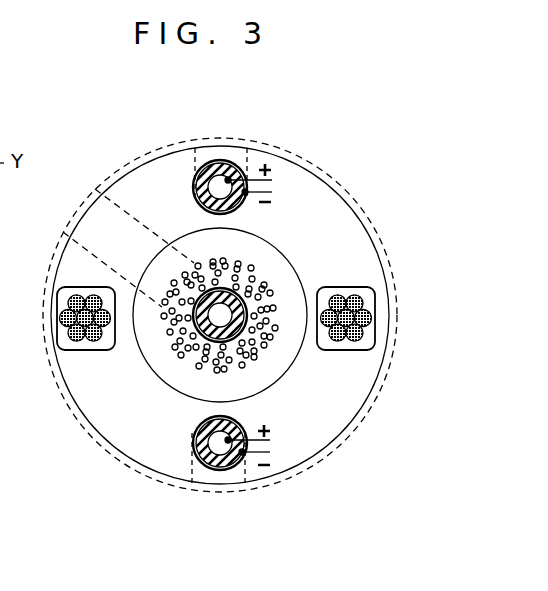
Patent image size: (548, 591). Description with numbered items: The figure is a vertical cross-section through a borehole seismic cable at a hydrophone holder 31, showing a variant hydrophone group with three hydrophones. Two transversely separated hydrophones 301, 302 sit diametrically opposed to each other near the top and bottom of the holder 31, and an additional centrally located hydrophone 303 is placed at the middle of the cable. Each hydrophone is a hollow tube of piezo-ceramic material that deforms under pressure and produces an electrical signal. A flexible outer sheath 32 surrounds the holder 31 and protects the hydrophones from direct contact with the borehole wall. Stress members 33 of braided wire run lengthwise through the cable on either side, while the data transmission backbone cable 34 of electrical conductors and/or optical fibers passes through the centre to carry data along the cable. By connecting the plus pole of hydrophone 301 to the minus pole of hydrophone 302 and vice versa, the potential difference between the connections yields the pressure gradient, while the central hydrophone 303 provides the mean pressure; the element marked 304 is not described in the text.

The hydrophone holder 31 is at (124, 507).
The flexible outer sheath 32 is at (83, 193).
The stress member 33 is at (113, 270).
The data transmission backbone cable 34 is at (232, 363).
The first transverse hydrophone 301 is at (195, 197).
The second transverse hydrophone 302 is at (193, 442).
The central hydrophone 303 is at (247, 150).
The insulating sheath 304 is at (245, 468).